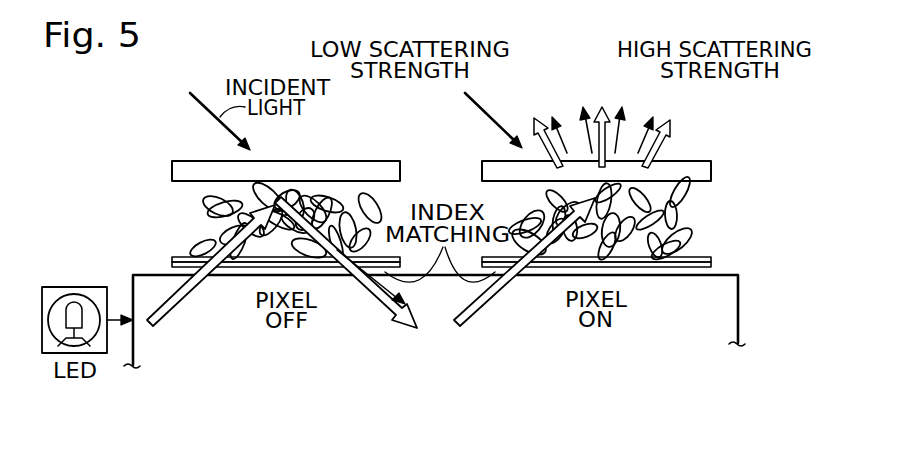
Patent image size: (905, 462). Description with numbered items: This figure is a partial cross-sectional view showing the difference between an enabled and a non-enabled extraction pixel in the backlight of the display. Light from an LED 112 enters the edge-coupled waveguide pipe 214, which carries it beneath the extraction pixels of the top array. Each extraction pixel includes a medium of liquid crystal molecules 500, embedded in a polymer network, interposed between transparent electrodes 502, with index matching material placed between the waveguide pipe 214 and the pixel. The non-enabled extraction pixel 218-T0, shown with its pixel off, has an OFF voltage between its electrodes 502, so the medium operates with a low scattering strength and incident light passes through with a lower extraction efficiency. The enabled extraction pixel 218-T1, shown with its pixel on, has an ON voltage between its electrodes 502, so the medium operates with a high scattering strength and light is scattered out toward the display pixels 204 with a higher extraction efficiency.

The LED 112 is at (76, 287).
The display pixel 204 is at (487, 107).
The waveguide pipe 214 is at (740, 297).
The non-enabled extraction pixel 218-T0 is at (394, 131).
The enabled extraction pixel 218-T1 is at (705, 130).
The liquid crystal molecules 500 is at (190, 227).
The transparent electrodes 502 is at (685, 258).